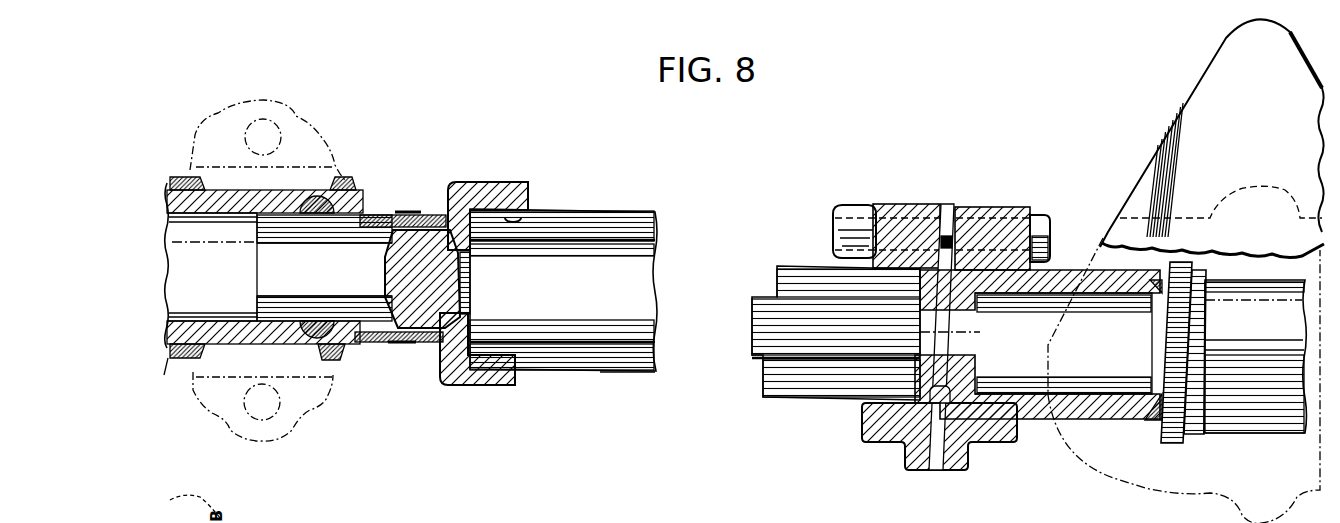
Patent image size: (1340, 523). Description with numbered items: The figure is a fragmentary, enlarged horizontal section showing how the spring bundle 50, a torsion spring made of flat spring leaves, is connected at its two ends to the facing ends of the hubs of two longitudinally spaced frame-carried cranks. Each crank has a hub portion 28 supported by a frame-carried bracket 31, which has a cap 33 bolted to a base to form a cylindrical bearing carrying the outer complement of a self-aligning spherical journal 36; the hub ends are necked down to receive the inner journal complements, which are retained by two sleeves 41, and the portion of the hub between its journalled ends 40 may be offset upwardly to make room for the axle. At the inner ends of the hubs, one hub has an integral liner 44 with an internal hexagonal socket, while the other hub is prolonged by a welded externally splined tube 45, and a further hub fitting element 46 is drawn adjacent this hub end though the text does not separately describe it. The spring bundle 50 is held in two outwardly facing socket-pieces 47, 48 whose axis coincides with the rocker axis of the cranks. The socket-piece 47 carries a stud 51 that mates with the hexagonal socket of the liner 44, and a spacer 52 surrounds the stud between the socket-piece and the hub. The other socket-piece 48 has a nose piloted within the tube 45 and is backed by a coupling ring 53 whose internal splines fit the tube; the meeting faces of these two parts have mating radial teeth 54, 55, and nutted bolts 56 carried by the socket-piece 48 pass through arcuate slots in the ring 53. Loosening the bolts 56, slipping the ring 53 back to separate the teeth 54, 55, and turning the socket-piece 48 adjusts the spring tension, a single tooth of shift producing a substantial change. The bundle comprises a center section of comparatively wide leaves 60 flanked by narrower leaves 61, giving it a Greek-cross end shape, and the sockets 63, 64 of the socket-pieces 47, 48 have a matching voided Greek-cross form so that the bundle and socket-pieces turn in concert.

The hub portion 28 is at (1287, 432).
The bracket 31 is at (1148, 161).
The cap 33 is at (328, 145).
The self-aligning spherical journal 36 is at (345, 180).
The journalled end 40 is at (247, 360).
The sleeve 41 is at (187, 185).
The liner 44 is at (263, 326).
The externally splined tube 45 is at (1150, 283).
The flange 46 is at (1050, 272).
The socket-piece 47 is at (489, 183).
The socket-piece 48 is at (918, 208).
The spring bundle 50 is at (628, 378).
The stud 51 is at (268, 264).
The spacer 52 is at (383, 214).
The coupling ring 53 is at (1000, 208).
The radial teeth 54 is at (946, 205).
The radial teeth 55 is at (957, 212).
The nutted bolt 56 is at (1045, 217).
The wide leaves 60 is at (622, 217).
The narrower leaves 61 is at (635, 300).
The socket 63 is at (512, 220).
The socket 64 is at (858, 403).